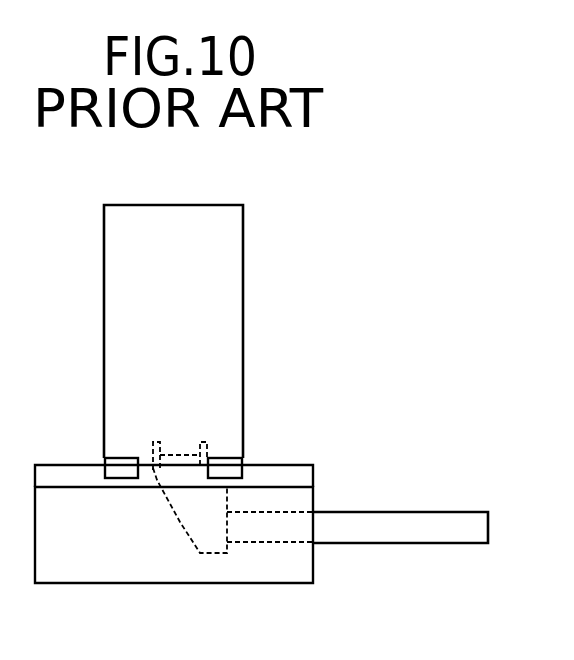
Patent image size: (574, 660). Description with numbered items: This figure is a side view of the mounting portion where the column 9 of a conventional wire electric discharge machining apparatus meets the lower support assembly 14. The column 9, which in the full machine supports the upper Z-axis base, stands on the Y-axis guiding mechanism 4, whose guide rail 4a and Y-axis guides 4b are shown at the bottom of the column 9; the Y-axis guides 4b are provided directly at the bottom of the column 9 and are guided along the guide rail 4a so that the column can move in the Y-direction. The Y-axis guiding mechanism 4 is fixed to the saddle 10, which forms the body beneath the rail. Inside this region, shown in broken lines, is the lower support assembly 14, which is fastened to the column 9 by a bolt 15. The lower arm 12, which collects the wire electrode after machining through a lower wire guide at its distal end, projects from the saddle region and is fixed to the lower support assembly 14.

The Y-axis guiding mechanism 4 is at (73, 463).
The guide rail 4a is at (315, 477).
The Y-axis guide 4b is at (245, 468).
The column 9 is at (244, 247).
The saddle 10 is at (315, 568).
The lower arm 12 is at (442, 512).
The lower support assembly 14 is at (180, 522).
The bolt 15 is at (208, 441).